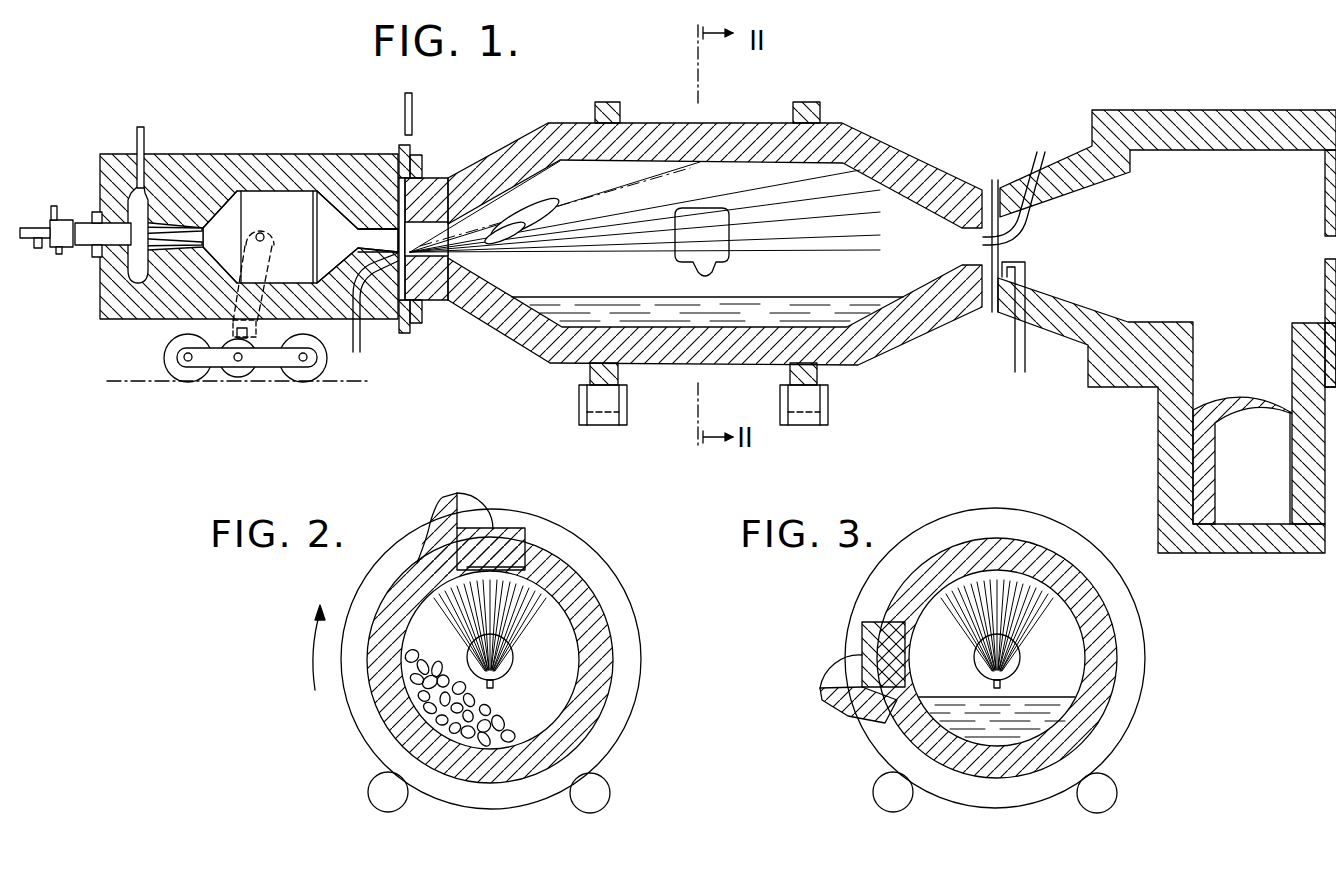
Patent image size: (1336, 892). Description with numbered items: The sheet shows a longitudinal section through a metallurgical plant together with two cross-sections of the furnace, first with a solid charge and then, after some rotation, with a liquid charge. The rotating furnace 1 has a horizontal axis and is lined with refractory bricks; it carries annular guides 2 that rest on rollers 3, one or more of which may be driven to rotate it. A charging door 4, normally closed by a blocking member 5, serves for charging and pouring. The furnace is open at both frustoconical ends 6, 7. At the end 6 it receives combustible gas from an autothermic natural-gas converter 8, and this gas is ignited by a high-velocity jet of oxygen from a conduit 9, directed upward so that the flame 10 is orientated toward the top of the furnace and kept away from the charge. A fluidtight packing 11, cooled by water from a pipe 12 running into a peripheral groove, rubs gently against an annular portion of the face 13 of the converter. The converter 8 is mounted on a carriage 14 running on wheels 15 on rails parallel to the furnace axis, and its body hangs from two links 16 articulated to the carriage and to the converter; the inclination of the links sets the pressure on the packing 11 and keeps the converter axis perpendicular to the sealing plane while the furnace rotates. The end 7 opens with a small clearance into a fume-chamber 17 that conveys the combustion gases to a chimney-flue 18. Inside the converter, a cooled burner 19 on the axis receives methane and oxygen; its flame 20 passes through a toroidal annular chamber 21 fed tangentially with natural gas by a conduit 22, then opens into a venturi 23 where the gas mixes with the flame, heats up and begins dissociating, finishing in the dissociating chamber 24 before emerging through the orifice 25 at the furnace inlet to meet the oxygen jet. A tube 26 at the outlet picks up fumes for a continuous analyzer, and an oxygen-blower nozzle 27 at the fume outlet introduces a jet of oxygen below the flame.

In FIG. 1, the rotating furnace 1 is at (868, 138).
In FIG. 2, the rotating furnace 1 is at (582, 598).
In FIG. 3, the rotating furnace 1 is at (1100, 620).
In FIG. 1, the annular guides 2 is at (616, 114).
In FIG. 2, the annular guides 2 is at (627, 671).
In FIG. 3, the annular guides 2 is at (1130, 692).
In FIG. 1, the rollers 3 is at (598, 422).
In FIG. 2, the rollers 3 is at (383, 782).
In FIG. 3, the rollers 3 is at (870, 785).
In FIG. 2, the charging door 4 is at (468, 508).
In FIG. 3, the charging door 4 is at (847, 680).
In FIG. 2, the blocking member 5 is at (526, 537).
In FIG. 3, the blocking member 5 is at (877, 622).
In FIG. 1, the frustoconical end 6 is at (421, 226).
In FIG. 1, the frustoconical end 7 is at (965, 230).
In FIG. 1, the autothermic natural-gas converter 8 is at (205, 165).
In FIG. 1, the conduit 9 is at (362, 338).
In FIG. 1, the flame 10 is at (540, 203).
In FIG. 1, the fluidtight packing 11 is at (417, 154).
In FIG. 1, the pipe 12 is at (404, 106).
In FIG. 1, the face 13 is at (367, 163).
In FIG. 1, the carriage 14 is at (217, 362).
In FIG. 1, the wheels 15 is at (174, 347).
In FIG. 1, the links 16 is at (244, 336).
In FIG. 1, the fume-chamber 17 is at (1176, 174).
In FIG. 1, the chimney-flue 18 is at (1247, 433).
In FIG. 1, the cooled burner 19 is at (105, 238).
In FIG. 1, the flame 20 is at (178, 227).
In FIG. 1, the annular chamber 21 is at (126, 286).
In FIG. 1, the conduit 22 is at (136, 132).
In FIG. 1, the venturi 23 is at (203, 228).
In FIG. 1, the dissociating chamber 24 is at (297, 270).
In FIG. 1, the orifice 25 is at (372, 236).
In FIG. 1, the tube 26 is at (1012, 356).
In FIG. 1, the oxygen-blower nozzle 27 is at (1028, 229).